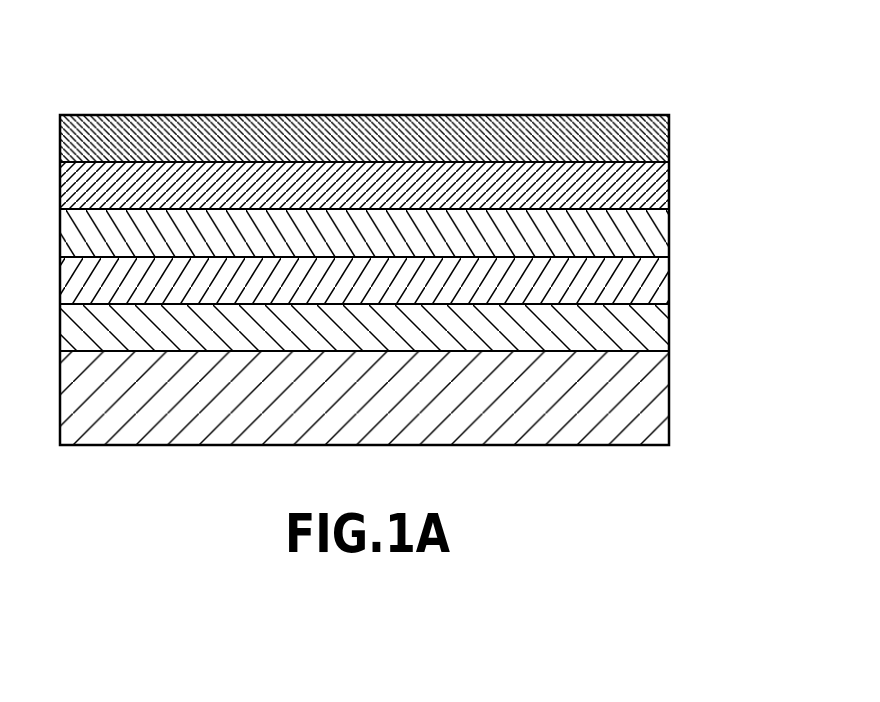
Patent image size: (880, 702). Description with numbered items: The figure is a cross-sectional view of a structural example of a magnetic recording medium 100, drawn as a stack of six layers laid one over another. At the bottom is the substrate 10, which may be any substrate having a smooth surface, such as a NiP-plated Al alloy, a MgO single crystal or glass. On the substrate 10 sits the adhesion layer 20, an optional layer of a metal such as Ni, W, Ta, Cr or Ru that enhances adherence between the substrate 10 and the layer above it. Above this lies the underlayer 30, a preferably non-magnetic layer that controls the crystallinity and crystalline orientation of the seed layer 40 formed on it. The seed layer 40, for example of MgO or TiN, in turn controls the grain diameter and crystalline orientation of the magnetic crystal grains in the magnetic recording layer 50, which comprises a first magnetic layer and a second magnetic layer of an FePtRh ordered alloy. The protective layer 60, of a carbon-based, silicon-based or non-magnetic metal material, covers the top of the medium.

The multilayer structure 100 is at (407, 225).
The substrate 10 is at (661, 396).
The adhesion layer 20 is at (661, 327).
The underlayer 30 is at (661, 280).
The seed layer 40 is at (661, 231).
The magnetic recording layer 50 is at (661, 185).
The protective layer 60 is at (661, 138).